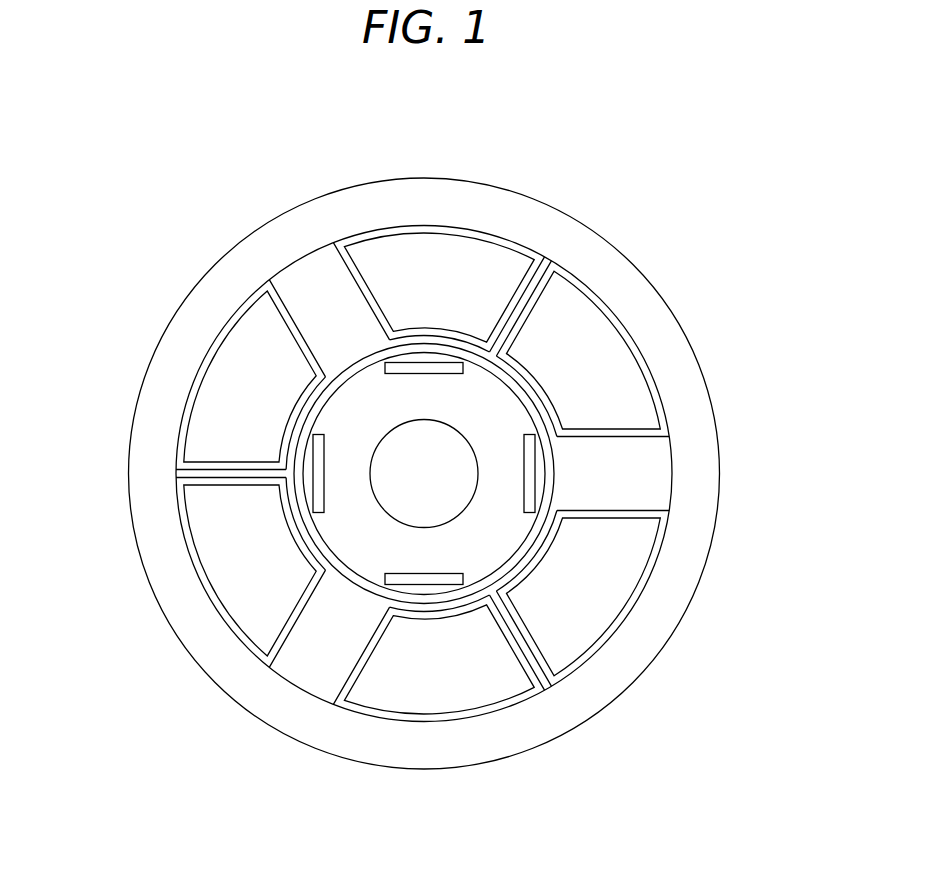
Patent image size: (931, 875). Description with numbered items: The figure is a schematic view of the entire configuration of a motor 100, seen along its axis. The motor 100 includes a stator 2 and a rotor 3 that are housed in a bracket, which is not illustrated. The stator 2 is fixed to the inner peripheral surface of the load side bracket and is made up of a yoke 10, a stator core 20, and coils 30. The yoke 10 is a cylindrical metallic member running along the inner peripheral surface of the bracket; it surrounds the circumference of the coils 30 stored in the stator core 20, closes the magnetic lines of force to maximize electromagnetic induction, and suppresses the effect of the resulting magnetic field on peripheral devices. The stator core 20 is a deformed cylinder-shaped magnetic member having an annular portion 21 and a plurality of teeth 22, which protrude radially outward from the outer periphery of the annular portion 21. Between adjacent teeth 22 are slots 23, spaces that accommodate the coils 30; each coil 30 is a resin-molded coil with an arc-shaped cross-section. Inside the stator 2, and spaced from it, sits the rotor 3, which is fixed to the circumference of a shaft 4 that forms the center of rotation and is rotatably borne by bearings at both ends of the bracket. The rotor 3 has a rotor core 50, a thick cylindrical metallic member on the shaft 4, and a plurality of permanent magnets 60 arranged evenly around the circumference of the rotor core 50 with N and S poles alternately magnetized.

The motor 100 is at (247, 129).
The stator 2 is at (217, 262).
The yoke 10 is at (190, 332).
The stator core 20 is at (650, 465).
The annular portion 21 is at (289, 438).
The teeth 22 is at (313, 275).
The slots 23 is at (303, 606).
The coils 30 is at (482, 265).
The rotor core 50 is at (543, 428).
The rotor 3 is at (487, 410).
The shaft 4 is at (431, 484).
The permanent magnets 60 is at (537, 492).